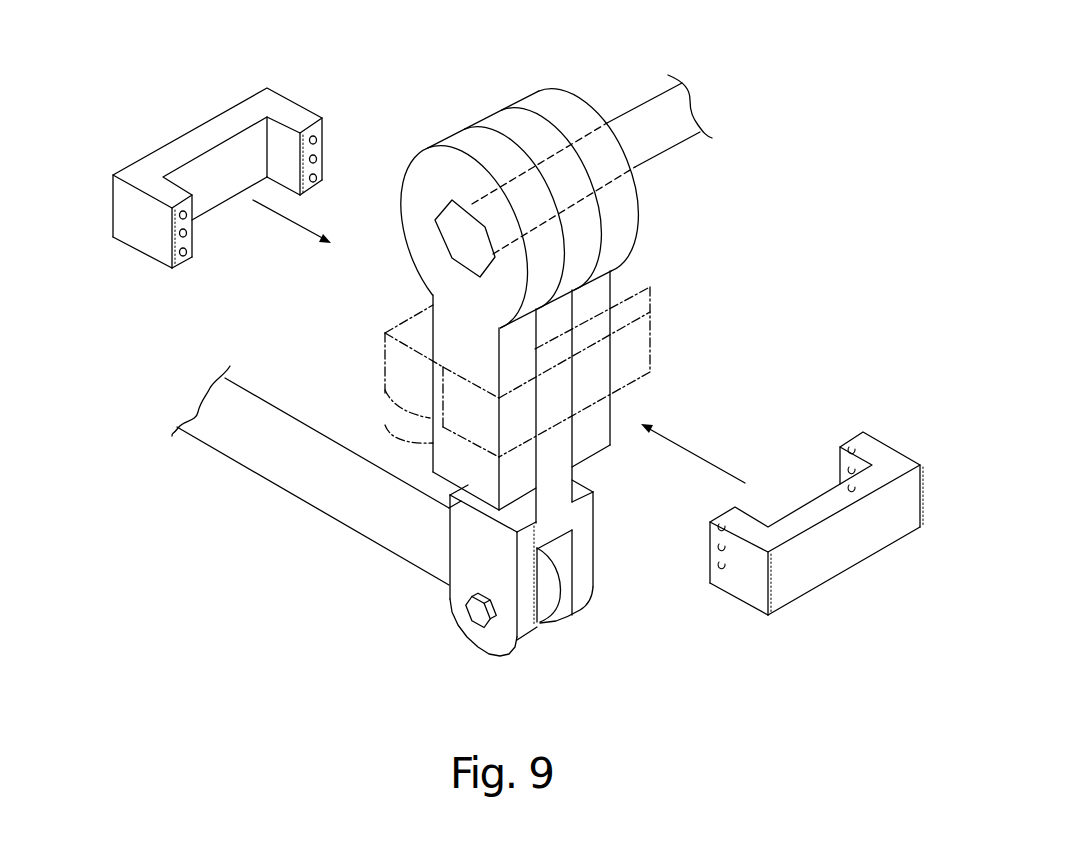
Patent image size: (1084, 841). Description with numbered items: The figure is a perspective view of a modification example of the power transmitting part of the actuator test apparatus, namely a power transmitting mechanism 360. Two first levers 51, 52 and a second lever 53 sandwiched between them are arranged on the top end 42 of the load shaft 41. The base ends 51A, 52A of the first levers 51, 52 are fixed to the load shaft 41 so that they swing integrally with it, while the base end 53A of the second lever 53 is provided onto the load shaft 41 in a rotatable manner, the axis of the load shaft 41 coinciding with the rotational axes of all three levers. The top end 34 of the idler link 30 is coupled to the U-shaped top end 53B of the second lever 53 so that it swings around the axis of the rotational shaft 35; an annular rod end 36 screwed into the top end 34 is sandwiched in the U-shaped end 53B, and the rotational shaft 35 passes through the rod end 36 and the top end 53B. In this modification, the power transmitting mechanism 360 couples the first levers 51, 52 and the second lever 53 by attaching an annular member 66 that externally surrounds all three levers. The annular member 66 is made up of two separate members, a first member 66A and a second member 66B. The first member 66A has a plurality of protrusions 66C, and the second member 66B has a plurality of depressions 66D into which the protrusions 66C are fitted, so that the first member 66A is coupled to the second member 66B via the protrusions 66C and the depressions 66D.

The power transmitting mechanism 360 is at (176, 70).
The annular member 66 is at (385, 407).
The first member 66A is at (235, 178).
The second member 66B is at (777, 535).
The protrusions 66C is at (319, 177).
The depressions 66D is at (850, 488).
The idler link 30 is at (209, 446).
The top end of the idler link 34 is at (421, 570).
The rotational shaft 35 is at (472, 637).
The rod end 36 is at (540, 623).
The load shaft 41 is at (661, 153).
The top end of the load shaft 42 is at (443, 243).
The first lever 51 is at (432, 293).
The base end of the first lever 51A is at (422, 237).
The first lever 52 is at (612, 273).
The base end of the first lever 52A is at (645, 222).
The second lever 53 is at (574, 456).
The base end of the second lever 53A is at (526, 198).
The top end of the second lever 53B is at (562, 587).